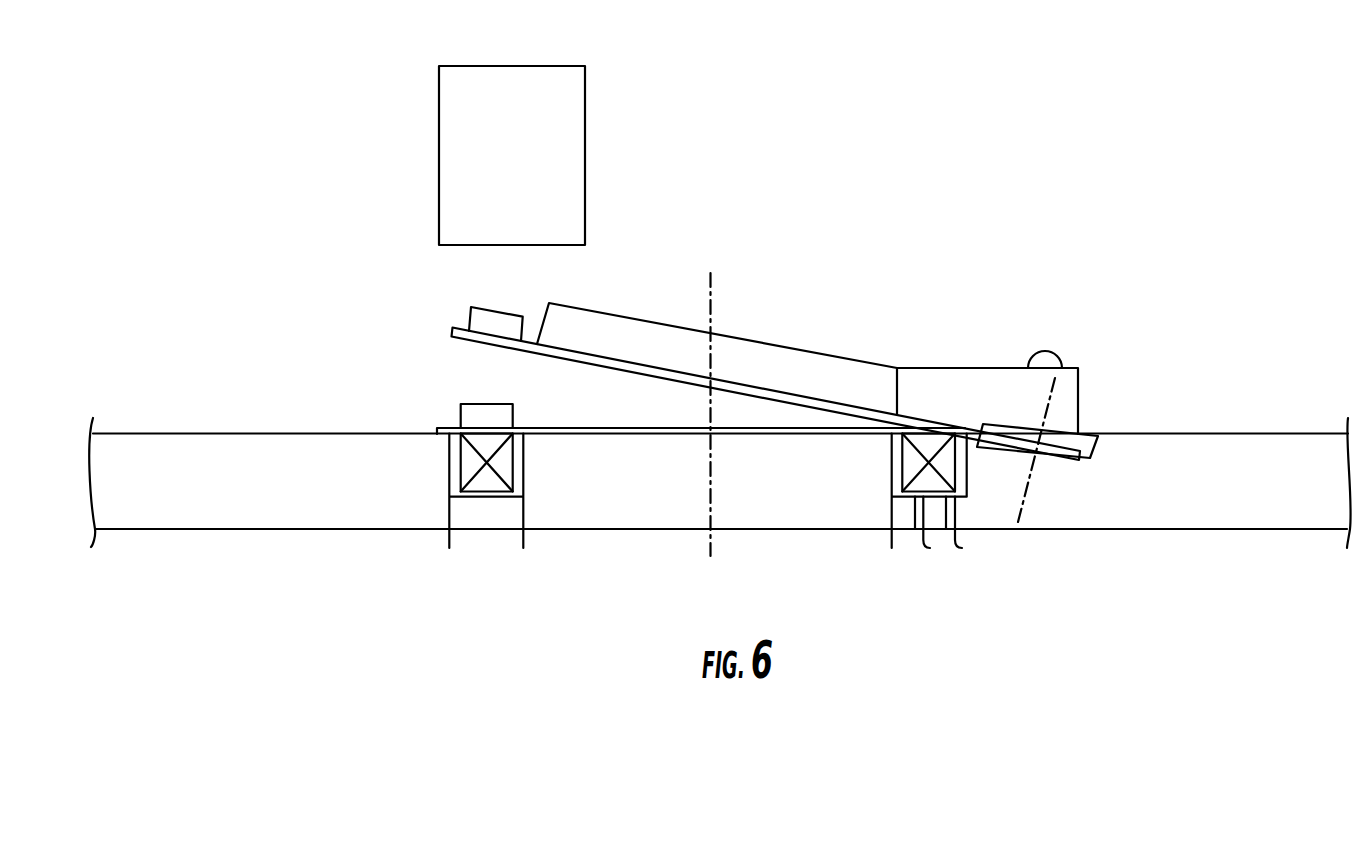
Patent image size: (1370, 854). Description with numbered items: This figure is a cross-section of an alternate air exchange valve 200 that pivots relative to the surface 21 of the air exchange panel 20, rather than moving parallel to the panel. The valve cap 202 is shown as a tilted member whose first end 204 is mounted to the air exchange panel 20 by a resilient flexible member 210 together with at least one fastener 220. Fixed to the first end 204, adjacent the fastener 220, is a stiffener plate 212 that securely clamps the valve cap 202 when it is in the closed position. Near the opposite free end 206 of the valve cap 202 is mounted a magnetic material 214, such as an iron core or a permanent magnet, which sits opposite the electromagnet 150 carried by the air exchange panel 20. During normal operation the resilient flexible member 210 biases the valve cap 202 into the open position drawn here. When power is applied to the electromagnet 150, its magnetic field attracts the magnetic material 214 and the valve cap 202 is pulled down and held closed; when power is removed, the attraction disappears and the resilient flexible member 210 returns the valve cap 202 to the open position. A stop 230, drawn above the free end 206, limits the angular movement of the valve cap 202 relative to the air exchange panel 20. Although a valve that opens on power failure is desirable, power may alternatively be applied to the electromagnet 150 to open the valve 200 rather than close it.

The air exchange panel 20 is at (292, 130).
The surface 21 is at (1155, 433).
The electromagnet 150 is at (488, 463).
The air exchange valve 200 is at (865, 318).
The valve cap 202 is at (675, 338).
The first end 204 is at (1081, 390).
The free end 206 is at (452, 329).
The resilient flexible member 210 is at (890, 413).
The stiffener plate 212 is at (1042, 453).
The magnetic material 214 is at (481, 317).
The fastener 220 is at (1043, 355).
The stop 230 is at (530, 167).